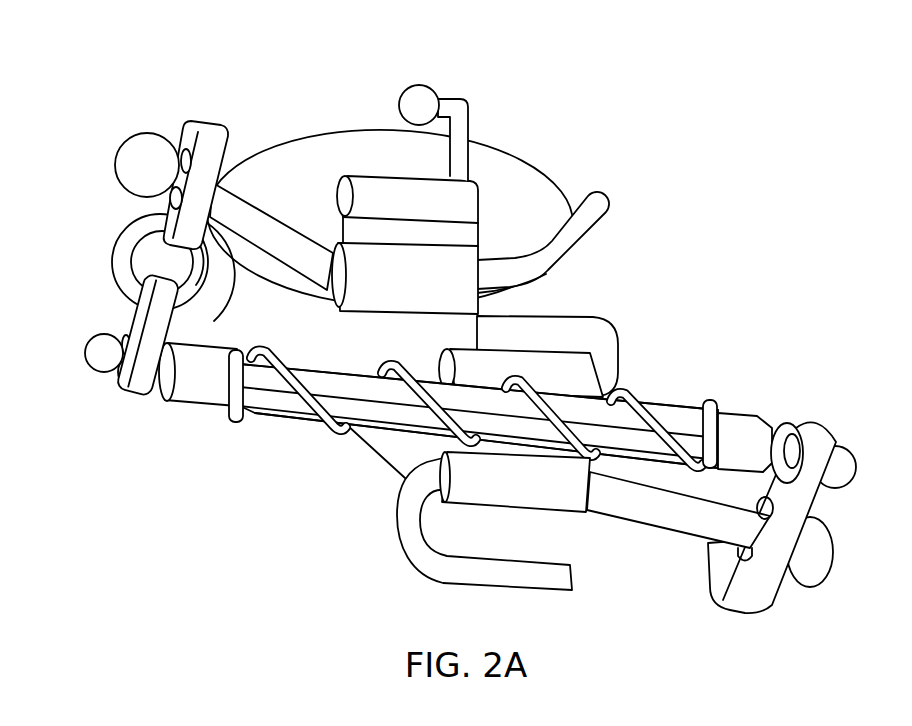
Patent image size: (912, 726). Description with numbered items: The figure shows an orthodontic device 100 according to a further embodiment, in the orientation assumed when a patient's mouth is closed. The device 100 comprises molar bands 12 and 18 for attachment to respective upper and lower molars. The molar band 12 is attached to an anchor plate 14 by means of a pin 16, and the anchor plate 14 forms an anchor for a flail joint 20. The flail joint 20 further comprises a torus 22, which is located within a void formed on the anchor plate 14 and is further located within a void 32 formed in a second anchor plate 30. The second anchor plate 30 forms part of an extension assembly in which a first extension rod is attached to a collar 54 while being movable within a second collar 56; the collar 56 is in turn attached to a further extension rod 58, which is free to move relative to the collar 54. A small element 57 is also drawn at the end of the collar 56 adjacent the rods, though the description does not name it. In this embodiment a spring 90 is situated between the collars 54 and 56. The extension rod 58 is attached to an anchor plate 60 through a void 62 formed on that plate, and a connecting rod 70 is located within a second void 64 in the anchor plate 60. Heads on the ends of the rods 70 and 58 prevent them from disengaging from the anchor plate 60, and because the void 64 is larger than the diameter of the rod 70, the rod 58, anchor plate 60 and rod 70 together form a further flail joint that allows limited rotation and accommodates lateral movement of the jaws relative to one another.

The orthodontic device 100 is at (742, 157).
The molar band 12 is at (513, 162).
The anchor plate 14 is at (213, 137).
The pin 16 is at (152, 150).
The molar band 18 is at (578, 332).
The flail joint 20 is at (92, 256).
The torus 22 is at (118, 286).
The second anchor plate 30 is at (135, 393).
The void 32 is at (110, 376).
The collar 54 is at (750, 422).
The second collar 56 is at (203, 396).
The clip 57 is at (254, 378).
The further extension rod 58 is at (283, 404).
The anchor plate 60 is at (827, 440).
The void 62 is at (797, 442).
The second void 64 is at (754, 560).
The connecting rod 70 is at (657, 514).
The spring 90 is at (643, 397).